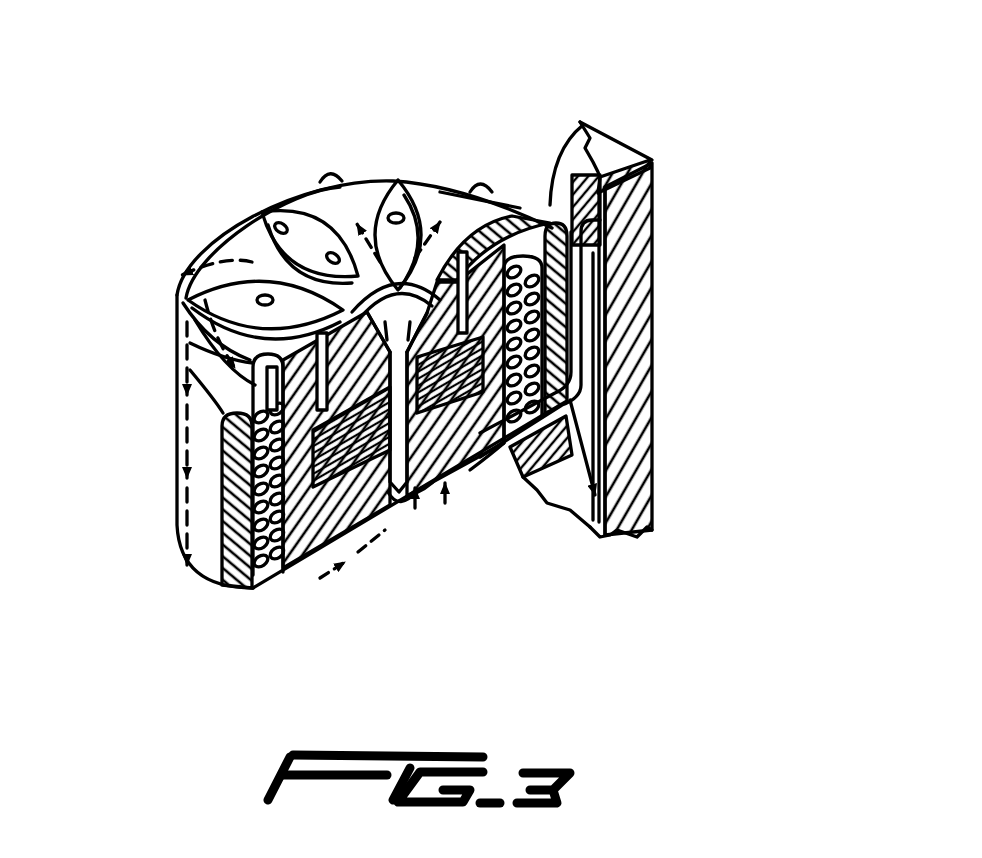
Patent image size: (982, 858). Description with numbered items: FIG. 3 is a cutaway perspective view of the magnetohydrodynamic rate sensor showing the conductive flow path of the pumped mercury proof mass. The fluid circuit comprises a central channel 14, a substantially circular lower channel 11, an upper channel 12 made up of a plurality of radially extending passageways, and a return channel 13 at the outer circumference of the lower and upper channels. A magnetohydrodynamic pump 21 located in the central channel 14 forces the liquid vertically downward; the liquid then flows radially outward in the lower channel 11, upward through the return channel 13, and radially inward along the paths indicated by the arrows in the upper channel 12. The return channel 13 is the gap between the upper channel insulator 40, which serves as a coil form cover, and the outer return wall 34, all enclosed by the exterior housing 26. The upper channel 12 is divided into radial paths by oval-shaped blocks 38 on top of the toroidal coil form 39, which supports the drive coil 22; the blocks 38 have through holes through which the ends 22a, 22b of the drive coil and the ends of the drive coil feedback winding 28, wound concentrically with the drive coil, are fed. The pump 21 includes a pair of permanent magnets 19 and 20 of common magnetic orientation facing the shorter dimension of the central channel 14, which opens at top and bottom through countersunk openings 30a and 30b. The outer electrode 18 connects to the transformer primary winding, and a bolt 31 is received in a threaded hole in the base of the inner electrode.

The lower channel 11 is at (657, 443).
The upper channel 12 is at (423, 178).
The return channel 13 is at (577, 124).
The central channel 14 is at (227, 470).
The outer electrode 18 is at (650, 513).
The permanent magnet 19 is at (473, 470).
The permanent magnet 20 is at (340, 565).
The magnetohydrodynamic pump 21 is at (433, 493).
The drive coil 22 is at (612, 256).
The drive coil end 22a is at (507, 203).
The drive coil end 22b is at (173, 330).
The exterior housing 26 is at (637, 347).
The drive coil feedback winding 28 is at (283, 573).
The countersunk opening 30a is at (332, 210).
The countersunk opening 30b is at (423, 507).
The bolt 31 is at (397, 522).
The outer return wall 34 is at (600, 318).
The oval-shaped blocks 38 is at (385, 178).
The coil form 39 is at (260, 587).
The upper channel insulator 40 is at (605, 268).